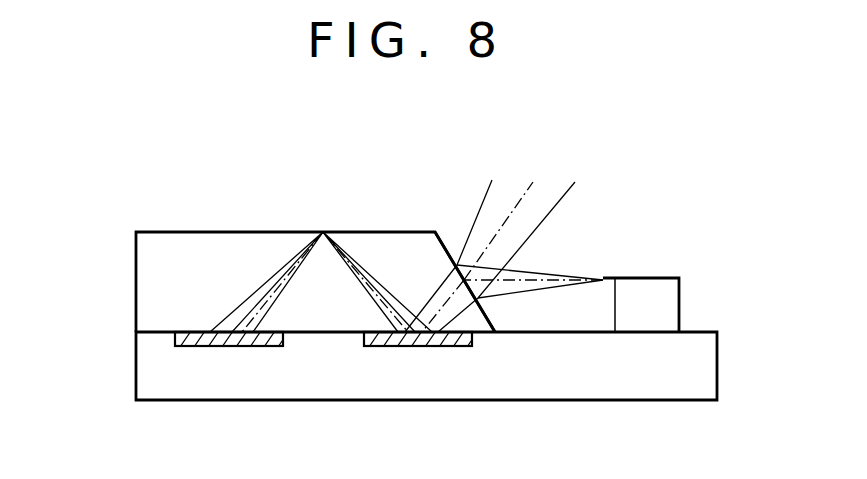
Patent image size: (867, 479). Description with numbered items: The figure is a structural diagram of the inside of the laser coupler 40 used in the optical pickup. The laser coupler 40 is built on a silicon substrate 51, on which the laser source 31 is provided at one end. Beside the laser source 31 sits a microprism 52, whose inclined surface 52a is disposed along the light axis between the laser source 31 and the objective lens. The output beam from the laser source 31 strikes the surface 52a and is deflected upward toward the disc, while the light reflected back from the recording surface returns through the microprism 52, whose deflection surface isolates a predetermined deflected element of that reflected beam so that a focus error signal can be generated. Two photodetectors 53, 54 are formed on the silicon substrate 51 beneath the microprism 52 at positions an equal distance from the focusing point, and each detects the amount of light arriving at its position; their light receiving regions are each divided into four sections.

The laser coupler 40 is at (406, 148).
The silicon substrate 51 is at (628, 392).
The microprism 52 is at (168, 236).
The surface of the microprism 52a is at (446, 230).
The laser source 31 is at (680, 295).
The photodetector 53 is at (248, 347).
The photodetector 54 is at (437, 347).